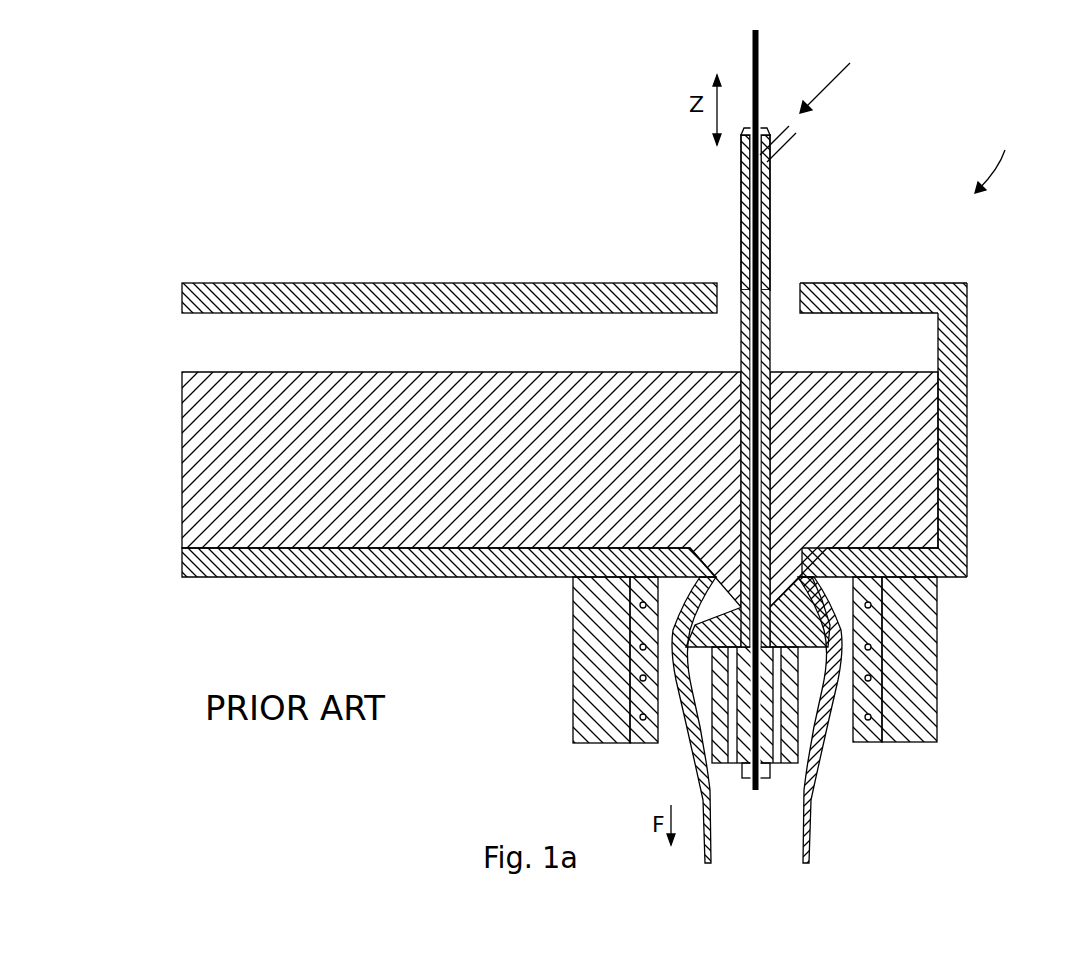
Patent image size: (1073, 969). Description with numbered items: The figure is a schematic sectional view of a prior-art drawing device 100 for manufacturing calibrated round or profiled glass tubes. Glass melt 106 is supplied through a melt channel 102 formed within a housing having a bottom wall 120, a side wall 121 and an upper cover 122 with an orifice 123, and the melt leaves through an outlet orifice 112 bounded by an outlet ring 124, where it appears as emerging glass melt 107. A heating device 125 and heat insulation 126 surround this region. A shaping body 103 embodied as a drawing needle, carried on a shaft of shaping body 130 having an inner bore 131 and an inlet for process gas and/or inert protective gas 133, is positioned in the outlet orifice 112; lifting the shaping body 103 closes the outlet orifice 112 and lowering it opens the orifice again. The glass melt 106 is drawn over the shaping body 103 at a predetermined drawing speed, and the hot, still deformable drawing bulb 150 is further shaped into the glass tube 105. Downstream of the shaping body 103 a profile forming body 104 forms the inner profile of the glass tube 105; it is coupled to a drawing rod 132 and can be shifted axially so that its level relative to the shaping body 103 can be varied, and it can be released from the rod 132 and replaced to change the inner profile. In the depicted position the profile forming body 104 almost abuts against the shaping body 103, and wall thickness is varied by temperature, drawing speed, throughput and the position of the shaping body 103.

The drawing device 100 is at (1001, 159).
The melt channel 102 is at (200, 359).
The shaping body 103 is at (820, 637).
The profile forming body 104 is at (796, 687).
The glass tube 105 is at (807, 817).
The glass melt 106 is at (309, 464).
The emerging glass melt 107 is at (700, 612).
The outlet orifice 112 is at (805, 552).
The bottom wall 120 is at (303, 577).
The side wall 121 is at (967, 399).
The upper cover 122 is at (872, 283).
The orifice 123 is at (786, 290).
The outlet ring 124 is at (903, 578).
The heating device 125 is at (642, 698).
The heat insulation 126 is at (593, 653).
The shaft of shaping body 130 is at (772, 355).
The inner bore 131 is at (762, 181).
The drawing rod 132 is at (759, 70).
The inlet for process gas and/or inert protective gas 133 is at (786, 138).
The drawing bulb 150 is at (682, 670).